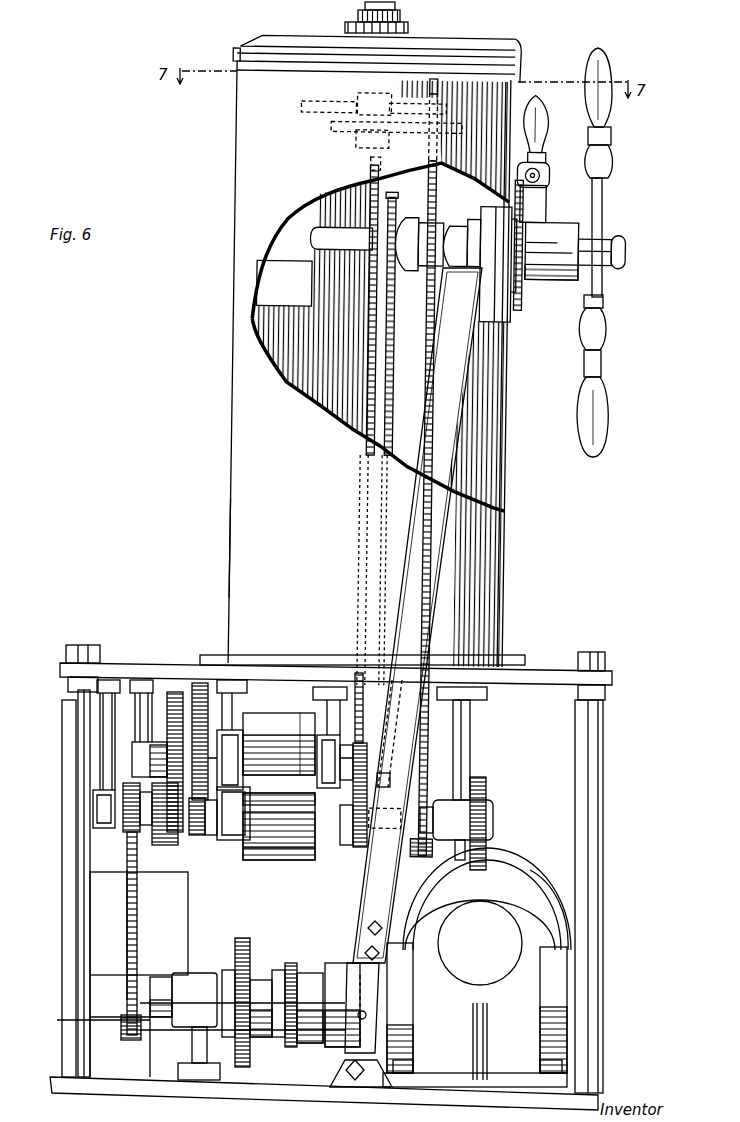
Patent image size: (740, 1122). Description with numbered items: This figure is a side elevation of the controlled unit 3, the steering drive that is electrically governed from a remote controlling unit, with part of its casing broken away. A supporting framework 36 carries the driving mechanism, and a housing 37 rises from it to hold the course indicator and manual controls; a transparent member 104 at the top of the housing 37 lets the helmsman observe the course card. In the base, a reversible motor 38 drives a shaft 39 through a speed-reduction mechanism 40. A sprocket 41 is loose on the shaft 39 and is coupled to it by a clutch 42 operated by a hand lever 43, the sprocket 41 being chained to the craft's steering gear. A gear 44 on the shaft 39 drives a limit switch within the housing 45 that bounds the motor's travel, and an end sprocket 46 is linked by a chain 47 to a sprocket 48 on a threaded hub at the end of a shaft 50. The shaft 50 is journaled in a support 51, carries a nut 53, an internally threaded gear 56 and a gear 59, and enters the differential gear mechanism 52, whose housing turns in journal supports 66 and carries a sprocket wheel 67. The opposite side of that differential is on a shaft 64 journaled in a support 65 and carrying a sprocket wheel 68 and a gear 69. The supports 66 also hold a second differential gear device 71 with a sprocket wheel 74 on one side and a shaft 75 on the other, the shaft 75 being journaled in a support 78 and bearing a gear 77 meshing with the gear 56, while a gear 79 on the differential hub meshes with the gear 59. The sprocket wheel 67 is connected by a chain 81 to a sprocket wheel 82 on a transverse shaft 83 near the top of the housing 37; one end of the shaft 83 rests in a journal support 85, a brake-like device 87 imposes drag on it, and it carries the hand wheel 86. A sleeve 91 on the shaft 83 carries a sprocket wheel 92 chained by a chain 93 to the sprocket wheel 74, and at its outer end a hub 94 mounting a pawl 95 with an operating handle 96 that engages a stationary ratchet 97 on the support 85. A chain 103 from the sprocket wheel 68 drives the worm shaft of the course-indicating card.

The controlled unit 3 is at (372, 351).
The supporting framework 36 is at (603, 825).
The housing 37 is at (230, 575).
The reversible motor 38 is at (505, 848).
The shaft 39 is at (160, 978).
The speed-reduction mechanism 40 is at (488, 912).
The sprocket 41 is at (288, 965).
The clutch 42 is at (340, 965).
The hand lever 43 is at (442, 536).
The gear 44 is at (243, 940).
The housing 45 is at (190, 885).
The sprocket 46 is at (125, 1018).
The chain 47 is at (127, 910).
The sprocket 48 is at (110, 796).
The shaft 50 is at (222, 808).
The support 51 is at (128, 810).
The differential gear mechanism 52 is at (285, 862).
The nut 53 is at (130, 842).
The gear 56 is at (170, 845).
The gear 59 is at (200, 829).
The shaft 64 is at (387, 860).
The support 65 is at (466, 742).
The journal supports 66 is at (238, 722).
The sprocket wheel 67 is at (360, 850).
The sprocket wheel 68 is at (404, 850).
The gear 69 is at (486, 784).
The differential gear device 71 is at (280, 714).
The sprocket wheel 74 is at (383, 752).
The shaft 75 is at (238, 745).
The gear 77 is at (172, 690).
The support 78 is at (140, 752).
The gear 79 is at (199, 683).
The chain 81 is at (362, 600).
The sprocket wheel 82 is at (398, 210).
The shaft 83 is at (333, 236).
The journal support 85 is at (498, 265).
The hand wheel 86 is at (606, 118).
The brake-like device 87 is at (284, 283).
The sleeve 91 is at (454, 228).
The sprocket wheel 92 is at (405, 275).
The chain 93 is at (386, 512).
The hub 94 is at (557, 222).
The pawl 95 is at (546, 163).
The operating handle 96 is at (547, 110).
The ratchet 97 is at (526, 305).
The chain 103 is at (430, 330).
The transparent member 104 is at (300, 38).